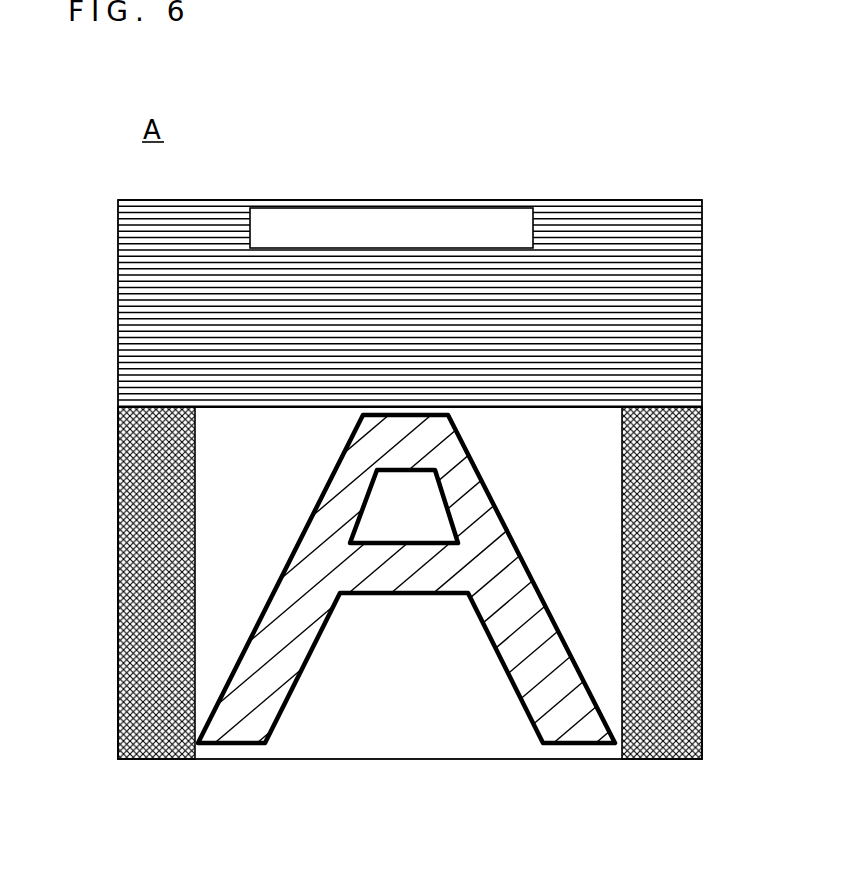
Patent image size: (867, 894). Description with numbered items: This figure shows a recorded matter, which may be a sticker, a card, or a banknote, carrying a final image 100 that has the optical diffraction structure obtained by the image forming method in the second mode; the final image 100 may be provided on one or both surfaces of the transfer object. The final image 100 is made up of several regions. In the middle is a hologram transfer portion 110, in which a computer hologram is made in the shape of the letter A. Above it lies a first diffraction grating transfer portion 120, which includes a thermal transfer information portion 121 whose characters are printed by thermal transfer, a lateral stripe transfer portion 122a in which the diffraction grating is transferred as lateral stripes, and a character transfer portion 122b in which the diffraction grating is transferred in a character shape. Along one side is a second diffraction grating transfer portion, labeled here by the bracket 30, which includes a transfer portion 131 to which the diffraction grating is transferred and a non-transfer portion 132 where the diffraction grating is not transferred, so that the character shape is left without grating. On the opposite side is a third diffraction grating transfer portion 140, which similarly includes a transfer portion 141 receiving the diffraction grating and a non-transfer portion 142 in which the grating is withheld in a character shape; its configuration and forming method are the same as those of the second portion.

The final image 100 is at (455, 760).
The hologram transfer portion 110 is at (367, 720).
The first diffraction grating transfer portion 120 is at (454, 223).
The thermal transfer information portion 121 is at (556, 280).
The lateral stripe transfer portion 122a is at (617, 257).
The character transfer portion 122b is at (435, 207).
The left side band 30 is at (102, 583).
The transfer portion 131 is at (118, 510).
The non-transfer portion 132 is at (50, 548).
The third diffraction grating transfer portion 140 is at (727, 583).
The transfer portion 141 is at (775, 530).
The non-transfer portion 142 is at (702, 495).